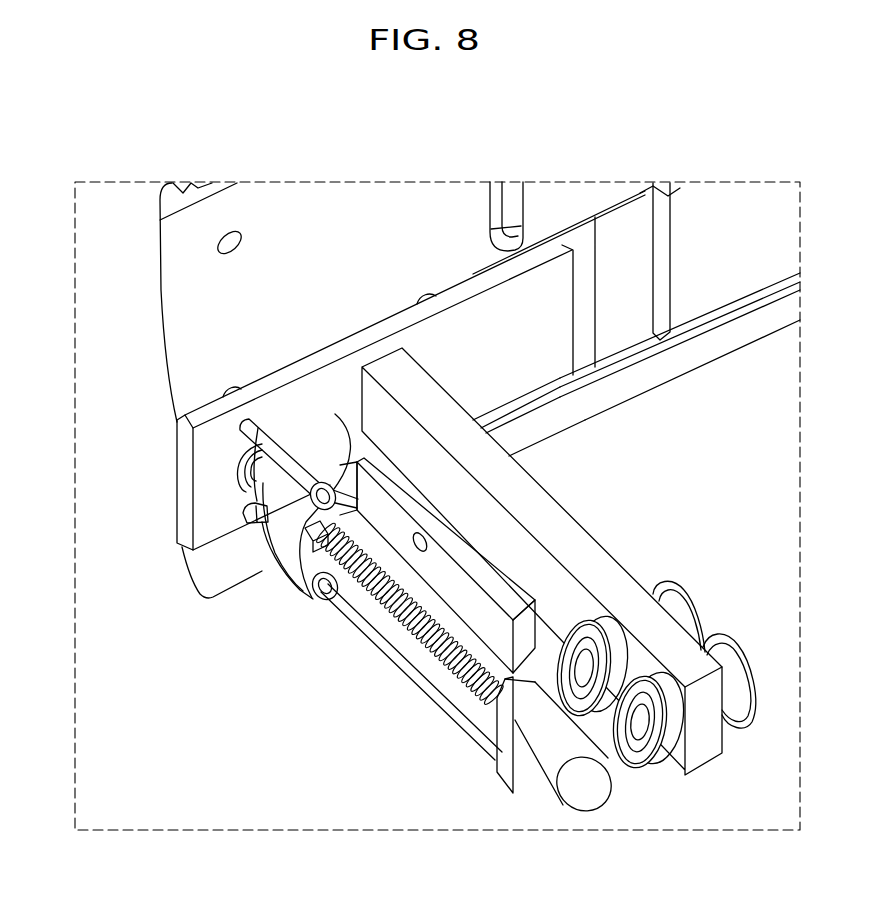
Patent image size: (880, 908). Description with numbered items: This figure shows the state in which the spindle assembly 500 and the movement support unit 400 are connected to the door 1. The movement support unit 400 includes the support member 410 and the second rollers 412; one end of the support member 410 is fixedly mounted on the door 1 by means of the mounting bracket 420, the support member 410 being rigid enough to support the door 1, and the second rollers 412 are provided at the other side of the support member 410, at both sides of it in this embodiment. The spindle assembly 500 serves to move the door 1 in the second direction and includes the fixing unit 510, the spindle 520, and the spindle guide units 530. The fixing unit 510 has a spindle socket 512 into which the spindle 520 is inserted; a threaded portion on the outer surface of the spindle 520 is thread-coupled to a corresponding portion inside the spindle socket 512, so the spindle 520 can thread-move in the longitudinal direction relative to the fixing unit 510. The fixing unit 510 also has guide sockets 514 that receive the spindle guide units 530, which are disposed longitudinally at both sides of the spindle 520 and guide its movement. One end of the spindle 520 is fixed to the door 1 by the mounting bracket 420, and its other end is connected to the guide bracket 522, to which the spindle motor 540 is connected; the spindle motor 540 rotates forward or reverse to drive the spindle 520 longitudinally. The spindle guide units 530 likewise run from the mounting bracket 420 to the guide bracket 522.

The door 1 is at (391, 203).
The movement support unit 400 is at (598, 521).
The support member 410 is at (531, 493).
The second rollers 412 is at (674, 600).
The mounting bracket 420 is at (212, 430).
The spindle assembly 500 is at (371, 657).
The fixing unit 510 is at (268, 503).
The spindle socket 512 is at (250, 528).
The guide sockets 514 is at (335, 415).
The spindle 520 is at (334, 597).
The guide bracket 522 is at (497, 760).
The spindle guide units 530 is at (420, 683).
The spindle motor 540 is at (580, 793).